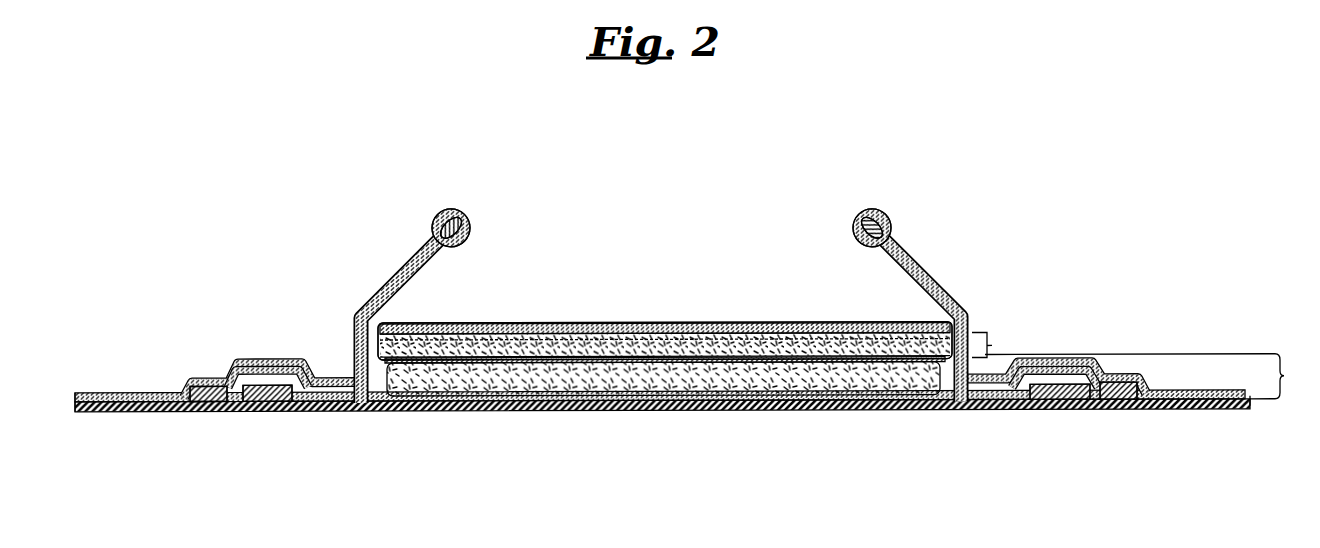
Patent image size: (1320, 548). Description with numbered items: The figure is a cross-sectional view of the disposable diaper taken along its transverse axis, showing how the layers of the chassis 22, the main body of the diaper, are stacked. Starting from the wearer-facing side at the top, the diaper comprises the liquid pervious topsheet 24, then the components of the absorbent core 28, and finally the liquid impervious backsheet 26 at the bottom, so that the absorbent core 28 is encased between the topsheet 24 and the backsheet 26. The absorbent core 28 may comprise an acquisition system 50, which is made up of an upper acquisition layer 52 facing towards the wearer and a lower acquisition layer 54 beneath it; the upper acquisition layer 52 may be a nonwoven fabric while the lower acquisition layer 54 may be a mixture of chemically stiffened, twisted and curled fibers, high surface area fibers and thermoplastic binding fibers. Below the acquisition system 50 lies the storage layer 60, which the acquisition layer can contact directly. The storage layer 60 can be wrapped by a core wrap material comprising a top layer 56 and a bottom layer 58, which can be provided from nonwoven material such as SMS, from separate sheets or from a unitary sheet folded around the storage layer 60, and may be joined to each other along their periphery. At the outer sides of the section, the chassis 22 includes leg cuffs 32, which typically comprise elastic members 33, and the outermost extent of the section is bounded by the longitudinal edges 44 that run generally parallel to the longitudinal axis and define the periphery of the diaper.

The chassis 22 is at (665, 341).
The topsheet 24 is at (665, 310).
The backsheet 26 is at (623, 404).
The absorbent core 28 is at (1148, 377).
The leg cuffs 32 is at (379, 259).
The elastic members 33 is at (458, 211).
The longitudinal edges 44 is at (73, 412).
The acquisition system 50 is at (996, 341).
The upper acquisition layer 52 is at (508, 335).
The lower acquisition layer 54 is at (468, 325).
The top layer 56 is at (787, 361).
The bottom layer 58 is at (736, 409).
The storage layer 60 is at (490, 369).